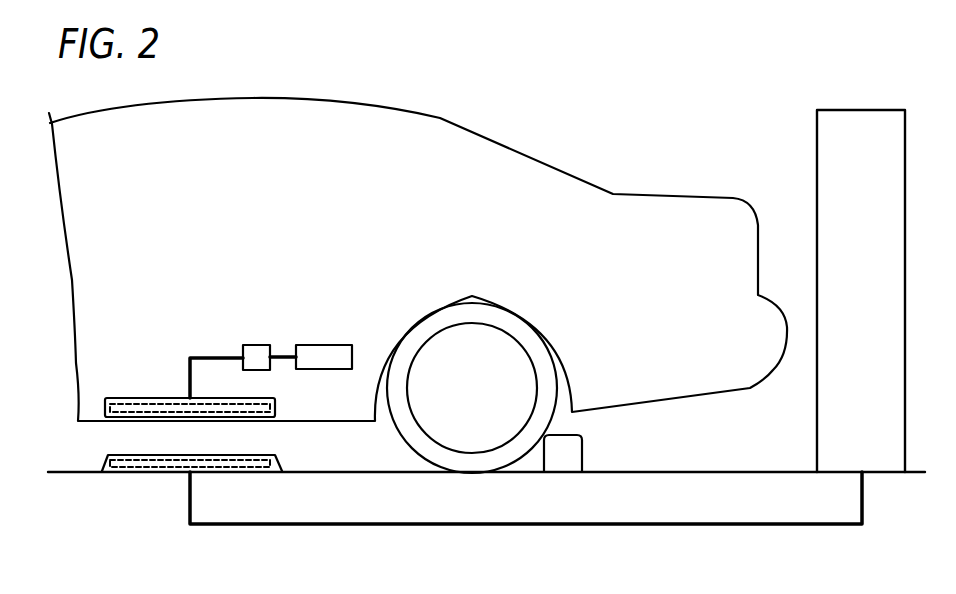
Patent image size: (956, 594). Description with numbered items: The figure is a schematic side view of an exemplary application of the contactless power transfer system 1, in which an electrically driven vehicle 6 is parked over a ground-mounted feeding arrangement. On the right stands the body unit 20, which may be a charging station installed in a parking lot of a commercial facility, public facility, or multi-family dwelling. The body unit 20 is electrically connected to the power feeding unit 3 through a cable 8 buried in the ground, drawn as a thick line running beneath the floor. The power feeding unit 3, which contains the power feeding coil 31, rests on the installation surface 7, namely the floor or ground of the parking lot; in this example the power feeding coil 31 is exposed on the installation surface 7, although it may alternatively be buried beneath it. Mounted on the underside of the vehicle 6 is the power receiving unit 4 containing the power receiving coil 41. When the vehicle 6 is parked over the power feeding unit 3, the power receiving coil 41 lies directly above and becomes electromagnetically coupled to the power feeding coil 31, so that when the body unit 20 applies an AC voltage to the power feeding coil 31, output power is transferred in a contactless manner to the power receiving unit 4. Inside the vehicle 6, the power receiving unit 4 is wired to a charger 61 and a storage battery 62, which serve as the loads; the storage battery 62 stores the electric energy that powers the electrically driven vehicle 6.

The contactless power transfer system 1 is at (883, 491).
The power feeding unit 3 is at (177, 480).
The power feeding coil 31 is at (155, 468).
The power receiving unit 4 is at (189, 384).
The power receiving coil 41 is at (166, 400).
The vehicle 6 is at (445, 117).
The charger 61 is at (257, 346).
The storage battery 62 is at (323, 346).
The installation surface 7 is at (337, 471).
The cable 8 is at (508, 527).
The body unit 20 is at (823, 145).